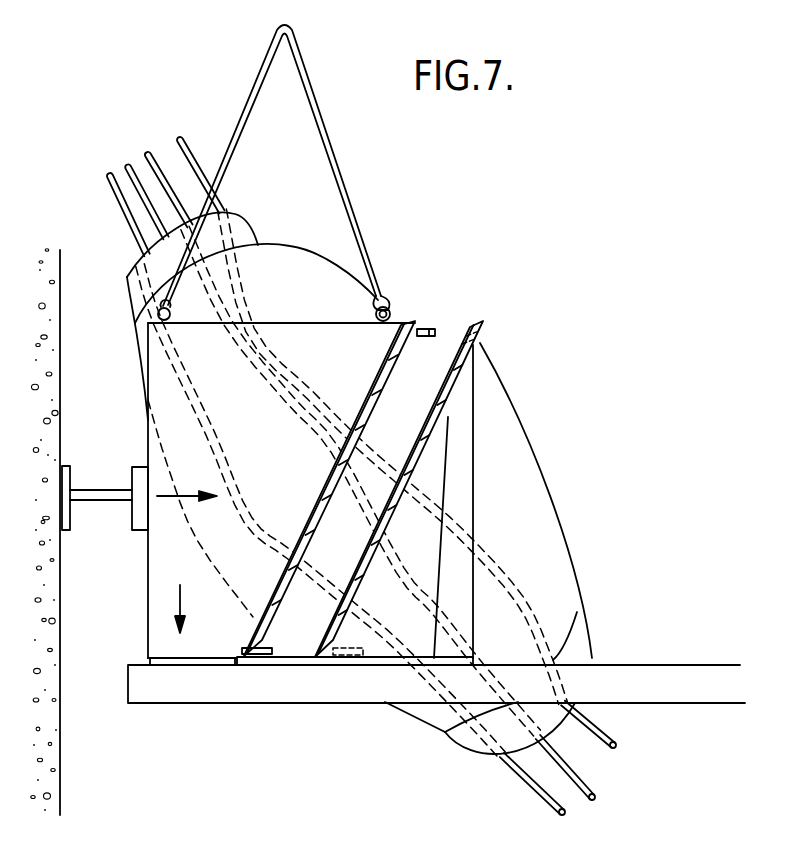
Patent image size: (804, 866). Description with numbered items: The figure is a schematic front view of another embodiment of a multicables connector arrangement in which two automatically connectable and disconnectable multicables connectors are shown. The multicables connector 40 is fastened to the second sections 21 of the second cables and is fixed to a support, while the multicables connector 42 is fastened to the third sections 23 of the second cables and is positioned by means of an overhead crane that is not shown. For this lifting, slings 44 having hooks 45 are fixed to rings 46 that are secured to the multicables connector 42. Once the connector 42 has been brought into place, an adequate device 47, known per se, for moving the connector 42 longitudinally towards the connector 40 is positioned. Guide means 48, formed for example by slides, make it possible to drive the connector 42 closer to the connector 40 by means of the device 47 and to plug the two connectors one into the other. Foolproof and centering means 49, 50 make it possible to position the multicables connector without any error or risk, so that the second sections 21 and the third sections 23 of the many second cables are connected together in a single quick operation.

The second section 21 is at (568, 767).
The third section 23 is at (151, 165).
The multicables connector 40 is at (515, 465).
The multicables connector 42 is at (337, 345).
The slings 44 is at (293, 60).
The hooks 45 is at (389, 302).
The rings 46 is at (158, 308).
The device for moving connector 47 is at (91, 502).
The guide means 48 is at (175, 663).
The foolproof and centering means 49 is at (434, 333).
The foolproof and centering means 50 is at (490, 328).